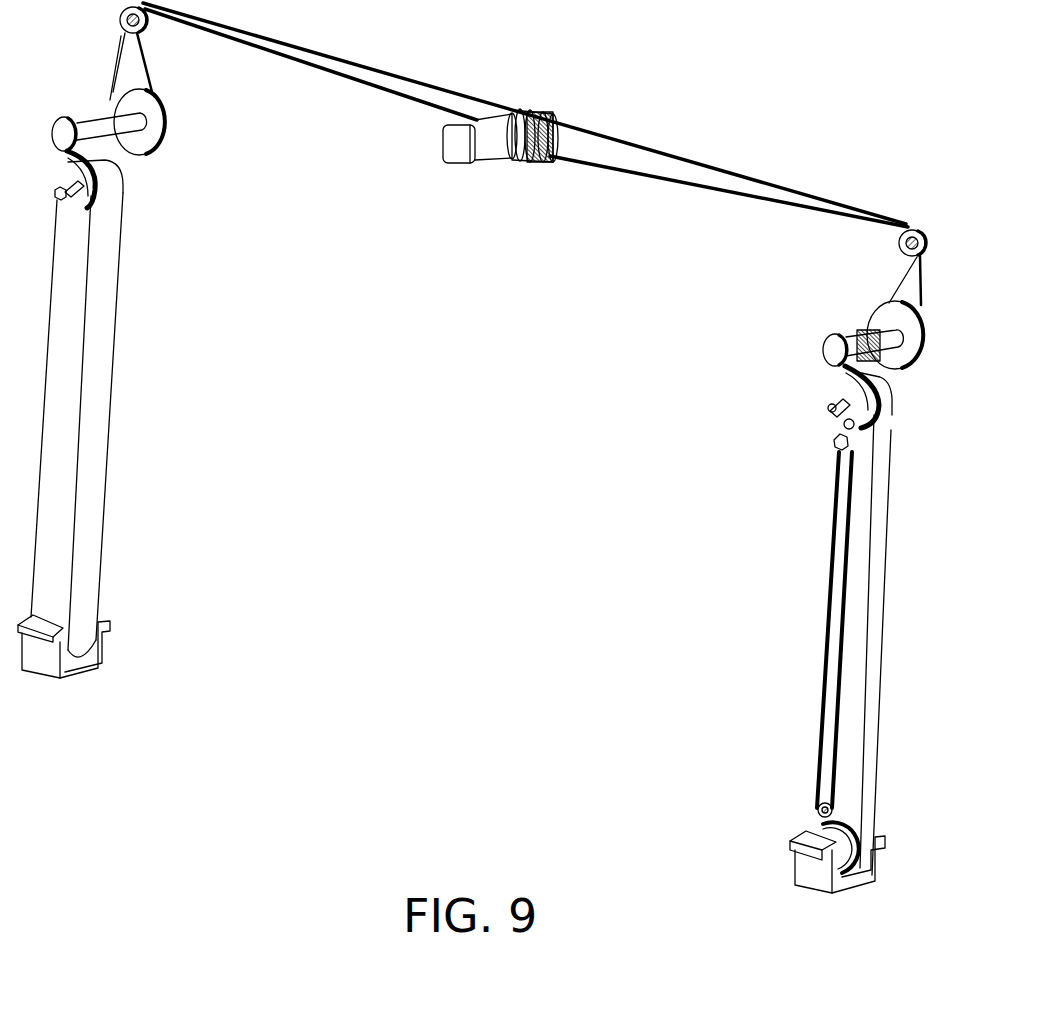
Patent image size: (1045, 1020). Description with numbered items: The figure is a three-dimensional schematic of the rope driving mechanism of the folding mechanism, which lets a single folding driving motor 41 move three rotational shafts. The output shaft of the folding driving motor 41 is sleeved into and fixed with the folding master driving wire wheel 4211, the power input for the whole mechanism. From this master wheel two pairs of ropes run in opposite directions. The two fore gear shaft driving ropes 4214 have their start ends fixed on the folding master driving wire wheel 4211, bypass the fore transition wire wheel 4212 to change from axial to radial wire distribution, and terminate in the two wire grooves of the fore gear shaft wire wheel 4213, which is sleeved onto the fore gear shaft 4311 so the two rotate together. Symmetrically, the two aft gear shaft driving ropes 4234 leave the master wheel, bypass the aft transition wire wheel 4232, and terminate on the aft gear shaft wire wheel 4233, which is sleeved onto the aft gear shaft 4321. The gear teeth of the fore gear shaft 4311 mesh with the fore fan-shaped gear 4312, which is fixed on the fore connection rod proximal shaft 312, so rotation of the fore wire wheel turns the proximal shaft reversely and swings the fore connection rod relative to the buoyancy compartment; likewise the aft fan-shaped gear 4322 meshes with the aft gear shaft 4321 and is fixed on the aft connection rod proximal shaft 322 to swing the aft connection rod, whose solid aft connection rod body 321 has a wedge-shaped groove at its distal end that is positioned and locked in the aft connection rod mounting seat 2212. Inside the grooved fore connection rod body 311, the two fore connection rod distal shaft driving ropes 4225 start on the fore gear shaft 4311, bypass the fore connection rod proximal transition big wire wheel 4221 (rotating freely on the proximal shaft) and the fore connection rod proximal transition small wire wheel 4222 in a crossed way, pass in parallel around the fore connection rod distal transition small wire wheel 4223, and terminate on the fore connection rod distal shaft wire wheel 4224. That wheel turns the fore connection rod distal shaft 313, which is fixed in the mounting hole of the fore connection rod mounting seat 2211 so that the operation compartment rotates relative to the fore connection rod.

The folding driving motor 41 is at (490, 152).
The folding master driving wire wheel 4211 is at (550, 150).
The fore transition wire wheel 4212 is at (900, 240).
The fore gear shaft wire wheel 4213 is at (885, 316).
The fore gear shaft driving rope 4214 is at (618, 170).
The fore connection rod proximal transition big wire wheel 4221 is at (845, 424).
The fore connection rod proximal transition small wire wheel 4222 is at (838, 450).
The fore connection rod distal transition small wire wheel 4223 is at (820, 806).
The fore connection rod distal shaft wire wheel 4224 is at (825, 826).
The fore connection rod distal shaft driving rope 4225 is at (858, 333).
The aft transition wire wheel 4232 is at (148, 32).
The aft gear shaft wire wheel 4233 is at (175, 107).
The aft gear shaft driving rope 4234 is at (292, 58).
The fore gear shaft 4311 is at (833, 348).
The fore fan-shaped gear 4312 is at (845, 388).
The aft gear shaft 4321 is at (100, 130).
The aft fan-shaped gear 4322 is at (105, 187).
The fore connection rod body 311 is at (857, 594).
The fore connection rod proximal shaft 312 is at (828, 405).
The fore connection rod distal shaft 313 is at (795, 866).
The aft connection rod body 321 is at (68, 390).
The aft connection rod proximal shaft 322 is at (62, 205).
The fore connection rod mounting seat 2211 is at (795, 882).
The aft connection rod mounting seat 2212 is at (105, 660).